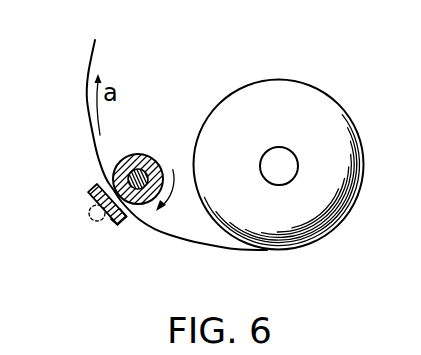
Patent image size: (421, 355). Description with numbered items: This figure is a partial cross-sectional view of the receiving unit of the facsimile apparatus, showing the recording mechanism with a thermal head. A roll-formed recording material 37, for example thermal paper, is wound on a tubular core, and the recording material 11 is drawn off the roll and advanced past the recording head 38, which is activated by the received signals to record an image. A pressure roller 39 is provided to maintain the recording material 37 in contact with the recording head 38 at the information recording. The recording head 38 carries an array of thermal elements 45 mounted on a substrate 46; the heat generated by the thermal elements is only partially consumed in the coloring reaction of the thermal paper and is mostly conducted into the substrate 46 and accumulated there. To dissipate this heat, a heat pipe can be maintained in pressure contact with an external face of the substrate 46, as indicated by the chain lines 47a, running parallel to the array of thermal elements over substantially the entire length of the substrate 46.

The recording material 11 is at (97, 46).
The roll-formed recording material 37 is at (312, 98).
The recording head 38 is at (84, 175).
The pressure roller 39 is at (146, 156).
The array of thermal elements 45 is at (126, 211).
The substrate 46 is at (113, 222).
The chain lines 47a is at (89, 212).